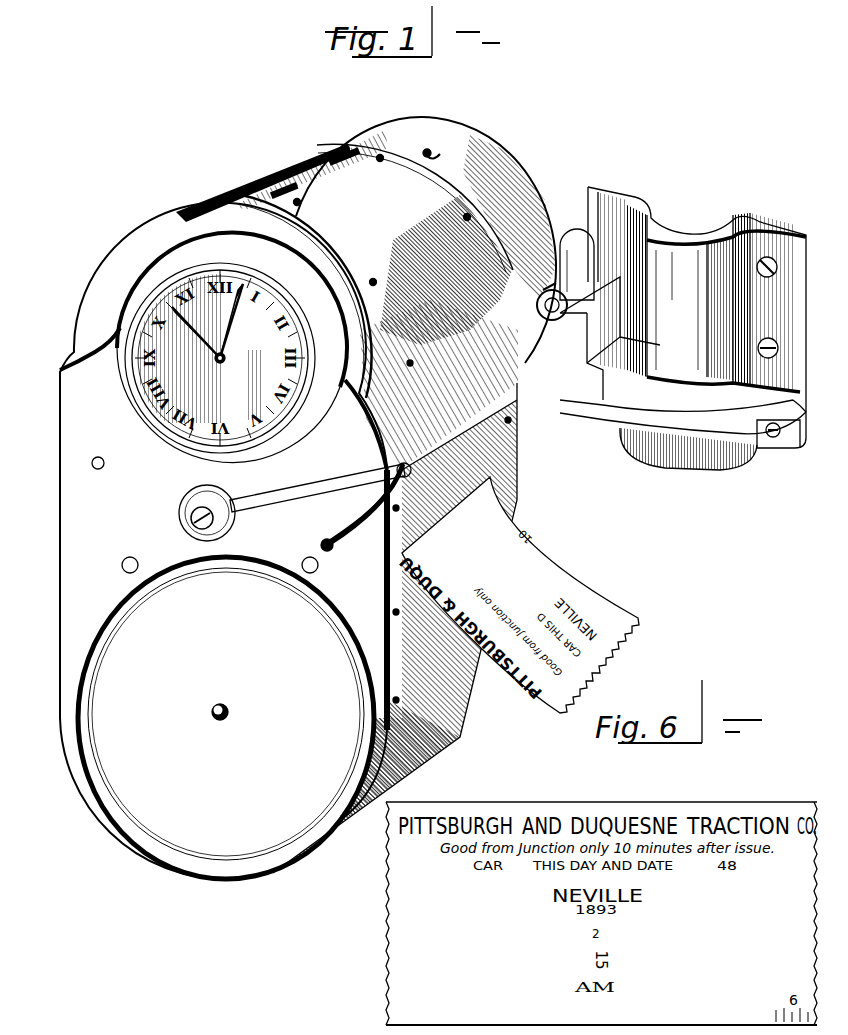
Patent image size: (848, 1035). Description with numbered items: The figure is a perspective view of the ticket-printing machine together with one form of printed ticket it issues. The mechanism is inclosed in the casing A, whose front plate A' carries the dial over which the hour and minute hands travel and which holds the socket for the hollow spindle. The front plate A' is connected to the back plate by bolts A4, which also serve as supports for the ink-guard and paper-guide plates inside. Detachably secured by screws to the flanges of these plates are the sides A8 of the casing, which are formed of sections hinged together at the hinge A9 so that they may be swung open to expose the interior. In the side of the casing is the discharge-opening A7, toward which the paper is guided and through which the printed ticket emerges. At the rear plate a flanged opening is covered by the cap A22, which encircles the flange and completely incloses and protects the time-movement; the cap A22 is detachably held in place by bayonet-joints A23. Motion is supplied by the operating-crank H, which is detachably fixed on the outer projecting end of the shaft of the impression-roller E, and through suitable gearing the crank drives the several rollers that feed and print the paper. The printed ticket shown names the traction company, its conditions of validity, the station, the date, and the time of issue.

The casing A is at (288, 540).
The front plate A' is at (47, 545).
The bolts A4 is at (130, 557).
The discharge-opening A7 is at (493, 477).
The sides A8 is at (240, 182).
The hinge A9 is at (300, 155).
The cap A22 is at (500, 152).
The bayonet-joints A23 is at (428, 148).
The impression-roller E is at (214, 508).
The operating-crank H is at (346, 485).